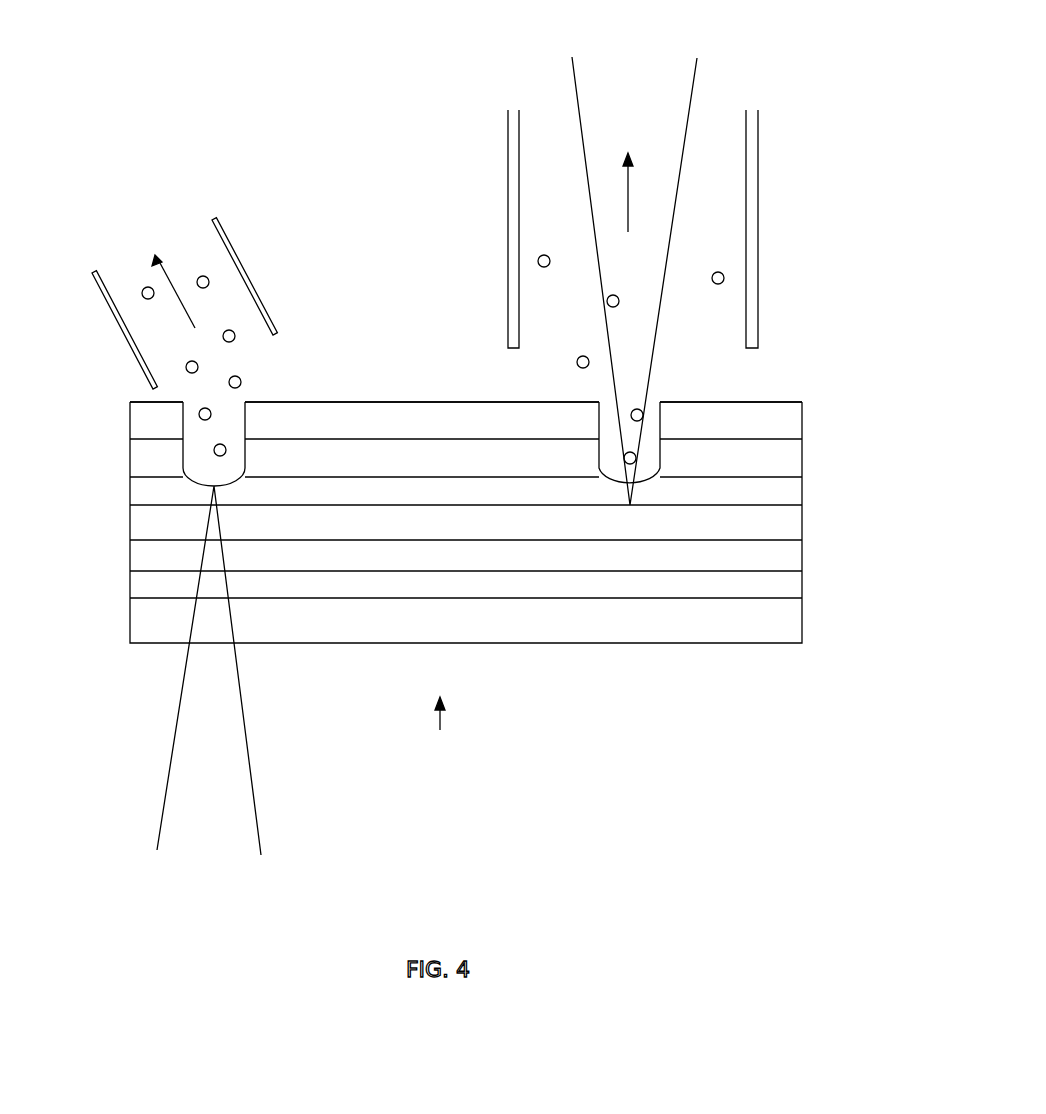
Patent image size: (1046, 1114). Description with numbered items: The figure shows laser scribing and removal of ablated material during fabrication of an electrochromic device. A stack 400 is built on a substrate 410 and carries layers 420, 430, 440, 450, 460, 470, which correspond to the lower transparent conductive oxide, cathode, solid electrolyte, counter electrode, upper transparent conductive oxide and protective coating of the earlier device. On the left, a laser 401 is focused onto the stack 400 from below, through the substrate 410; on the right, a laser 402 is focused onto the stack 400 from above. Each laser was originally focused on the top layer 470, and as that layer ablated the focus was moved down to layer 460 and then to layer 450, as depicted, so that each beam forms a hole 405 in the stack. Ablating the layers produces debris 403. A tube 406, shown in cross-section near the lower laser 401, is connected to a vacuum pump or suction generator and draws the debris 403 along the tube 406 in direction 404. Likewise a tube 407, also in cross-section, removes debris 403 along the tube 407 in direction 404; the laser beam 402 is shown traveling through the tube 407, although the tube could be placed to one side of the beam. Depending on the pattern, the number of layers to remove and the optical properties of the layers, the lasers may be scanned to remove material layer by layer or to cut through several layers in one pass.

The stack 400 is at (445, 736).
The laser 401 is at (170, 775).
The laser 402 is at (695, 75).
The debris 403 is at (240, 378).
The direction 404 is at (392, 240).
The hole 405 is at (232, 410).
The tube 406 is at (120, 325).
The tube 407 is at (510, 195).
The substrate 410 is at (630, 632).
The layer 420 is at (778, 582).
The layer 430 is at (137, 553).
The layer 440 is at (782, 525).
The layer 450 is at (137, 494).
The layer 460 is at (782, 458).
The layer 470 is at (137, 421).